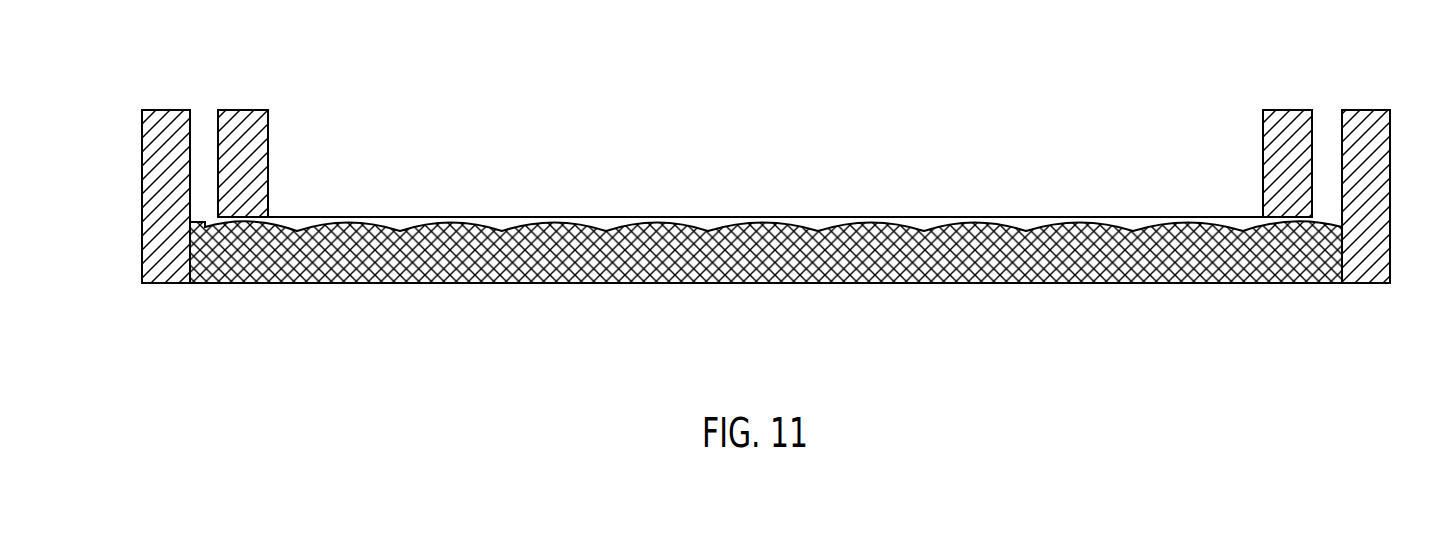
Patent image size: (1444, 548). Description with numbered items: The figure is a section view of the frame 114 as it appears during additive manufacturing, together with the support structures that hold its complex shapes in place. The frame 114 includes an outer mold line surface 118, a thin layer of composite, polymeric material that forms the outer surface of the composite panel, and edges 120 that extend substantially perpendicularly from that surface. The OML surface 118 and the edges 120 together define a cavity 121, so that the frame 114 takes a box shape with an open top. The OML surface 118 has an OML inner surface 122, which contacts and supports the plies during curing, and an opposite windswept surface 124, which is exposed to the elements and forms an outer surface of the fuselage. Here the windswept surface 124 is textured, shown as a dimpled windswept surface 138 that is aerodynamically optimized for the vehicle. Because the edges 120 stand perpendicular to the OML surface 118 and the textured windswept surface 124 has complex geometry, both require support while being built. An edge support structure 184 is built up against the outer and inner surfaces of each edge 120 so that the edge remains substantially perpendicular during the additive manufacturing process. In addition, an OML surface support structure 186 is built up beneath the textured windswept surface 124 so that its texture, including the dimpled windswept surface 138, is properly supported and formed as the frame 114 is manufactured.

The frame 114 is at (204, 122).
The outer mold line surface 118 is at (708, 222).
The edge 120 is at (208, 200).
The cavity 121 is at (767, 187).
The OML inner surface 122 is at (1025, 215).
The windswept surface 124 is at (900, 218).
The dimpled windswept surface 138 is at (398, 222).
The edge support structure 184 is at (250, 110).
The OML surface support structure 186 is at (497, 260).